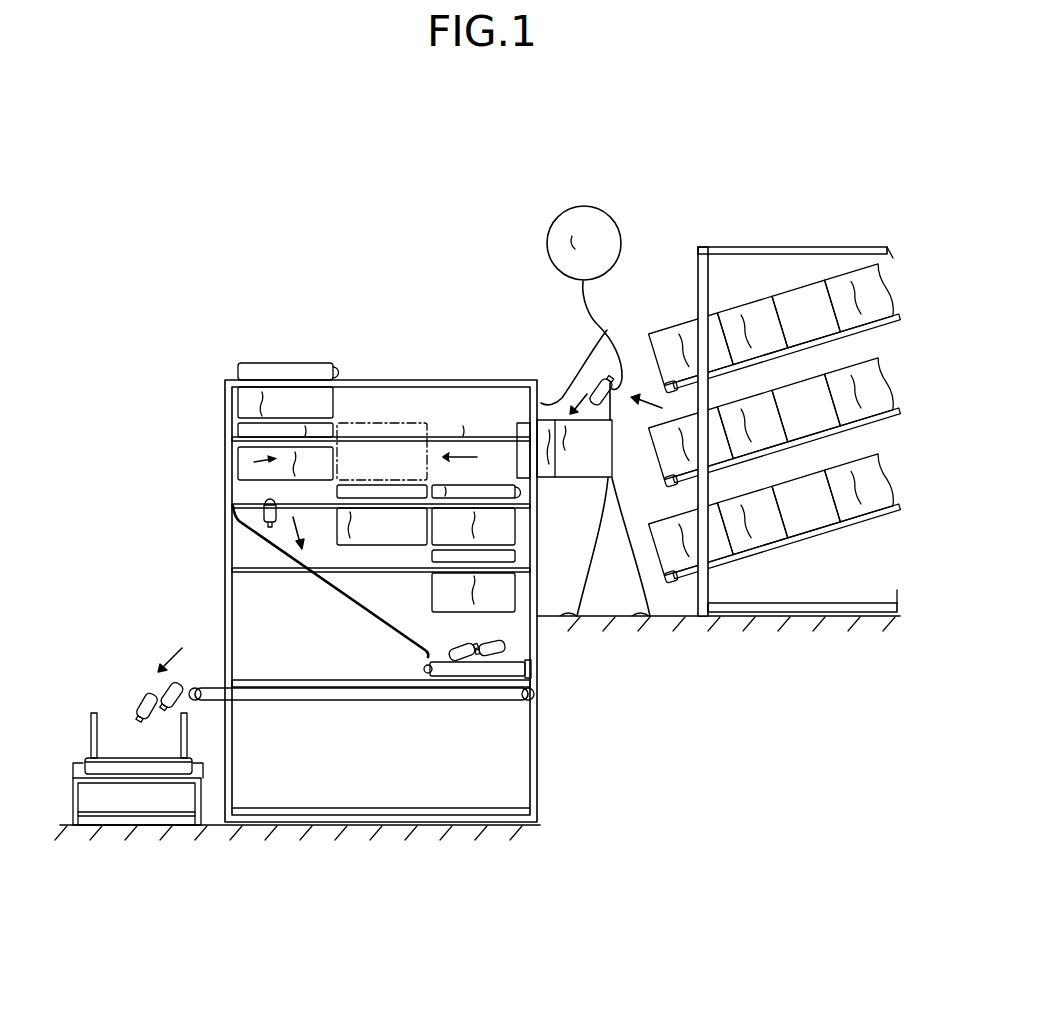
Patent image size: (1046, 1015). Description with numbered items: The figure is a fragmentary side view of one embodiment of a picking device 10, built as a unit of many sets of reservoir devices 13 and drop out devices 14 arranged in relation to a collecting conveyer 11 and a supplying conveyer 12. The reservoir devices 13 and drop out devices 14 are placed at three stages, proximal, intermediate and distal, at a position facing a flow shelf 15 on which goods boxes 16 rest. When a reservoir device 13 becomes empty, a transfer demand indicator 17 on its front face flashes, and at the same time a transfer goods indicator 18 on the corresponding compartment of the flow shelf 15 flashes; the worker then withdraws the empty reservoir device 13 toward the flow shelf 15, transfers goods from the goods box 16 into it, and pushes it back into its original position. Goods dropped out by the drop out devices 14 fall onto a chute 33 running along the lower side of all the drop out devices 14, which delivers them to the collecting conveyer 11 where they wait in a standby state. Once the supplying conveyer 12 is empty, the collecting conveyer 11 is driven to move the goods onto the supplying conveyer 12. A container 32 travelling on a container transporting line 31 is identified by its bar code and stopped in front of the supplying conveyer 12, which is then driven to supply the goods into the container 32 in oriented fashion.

The picking device 10 is at (437, 285).
The collecting conveyer 11 is at (523, 659).
The supplying conveyer 12 is at (506, 712).
The reservoir device 13 is at (299, 400).
The drop out device 14 is at (228, 462).
The flow shelf 15 is at (830, 237).
The goods box 16 is at (749, 312).
The transfer demand indicator 17 is at (612, 422).
The transfer goods indicator 18 is at (662, 481).
The container transporting line 31 is at (144, 793).
The container 32 is at (90, 729).
The chute 33 is at (300, 584).